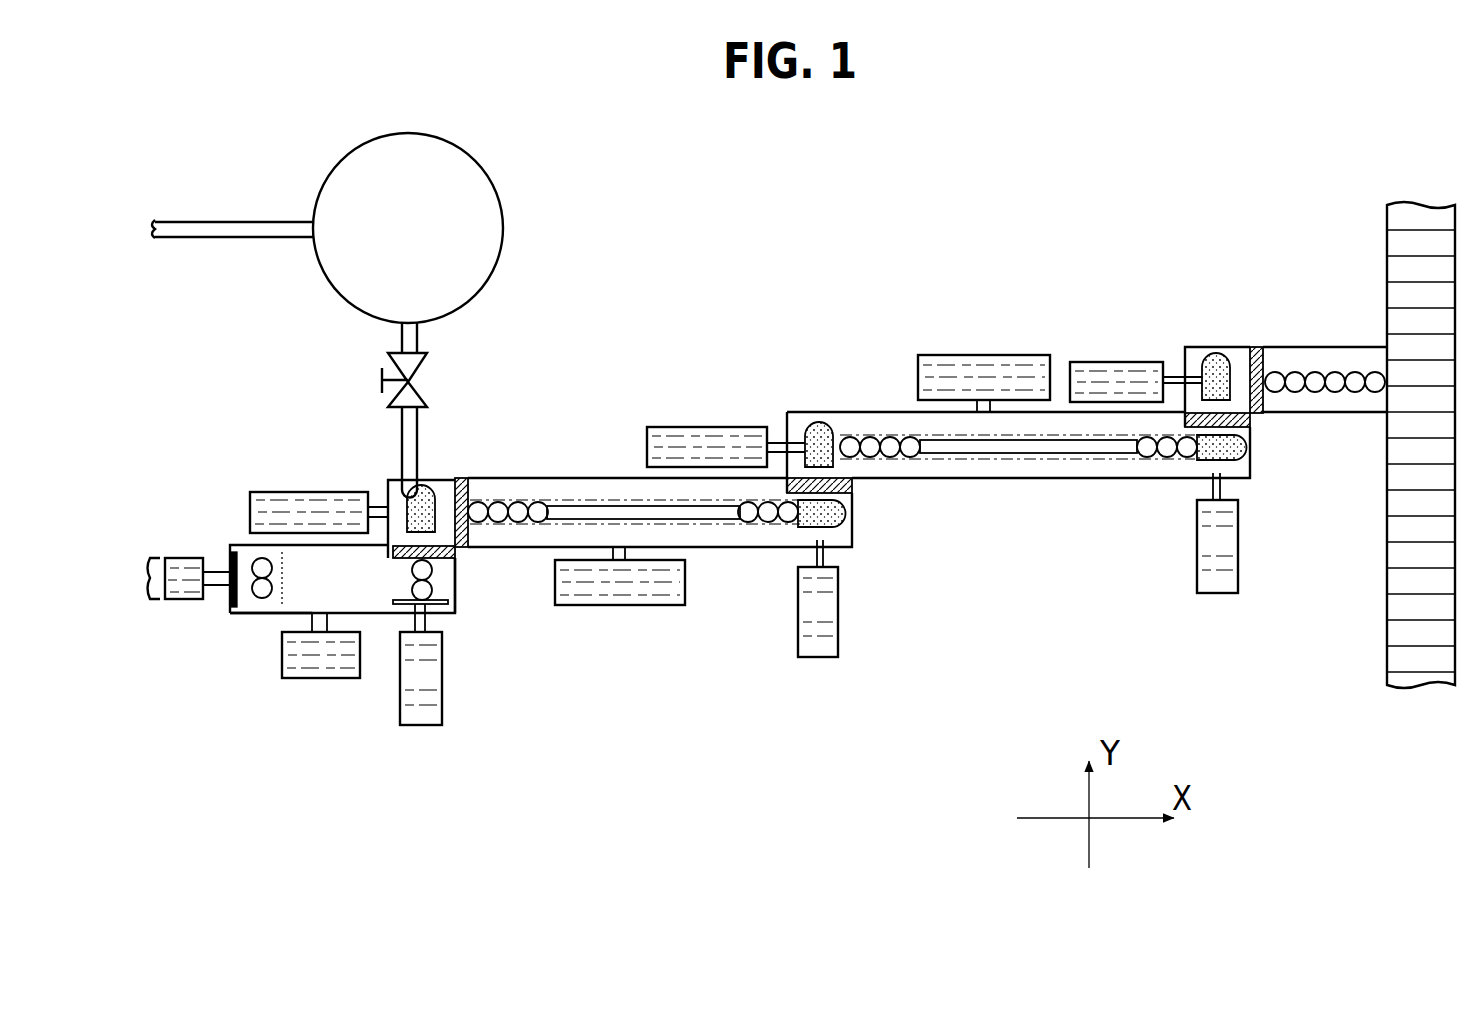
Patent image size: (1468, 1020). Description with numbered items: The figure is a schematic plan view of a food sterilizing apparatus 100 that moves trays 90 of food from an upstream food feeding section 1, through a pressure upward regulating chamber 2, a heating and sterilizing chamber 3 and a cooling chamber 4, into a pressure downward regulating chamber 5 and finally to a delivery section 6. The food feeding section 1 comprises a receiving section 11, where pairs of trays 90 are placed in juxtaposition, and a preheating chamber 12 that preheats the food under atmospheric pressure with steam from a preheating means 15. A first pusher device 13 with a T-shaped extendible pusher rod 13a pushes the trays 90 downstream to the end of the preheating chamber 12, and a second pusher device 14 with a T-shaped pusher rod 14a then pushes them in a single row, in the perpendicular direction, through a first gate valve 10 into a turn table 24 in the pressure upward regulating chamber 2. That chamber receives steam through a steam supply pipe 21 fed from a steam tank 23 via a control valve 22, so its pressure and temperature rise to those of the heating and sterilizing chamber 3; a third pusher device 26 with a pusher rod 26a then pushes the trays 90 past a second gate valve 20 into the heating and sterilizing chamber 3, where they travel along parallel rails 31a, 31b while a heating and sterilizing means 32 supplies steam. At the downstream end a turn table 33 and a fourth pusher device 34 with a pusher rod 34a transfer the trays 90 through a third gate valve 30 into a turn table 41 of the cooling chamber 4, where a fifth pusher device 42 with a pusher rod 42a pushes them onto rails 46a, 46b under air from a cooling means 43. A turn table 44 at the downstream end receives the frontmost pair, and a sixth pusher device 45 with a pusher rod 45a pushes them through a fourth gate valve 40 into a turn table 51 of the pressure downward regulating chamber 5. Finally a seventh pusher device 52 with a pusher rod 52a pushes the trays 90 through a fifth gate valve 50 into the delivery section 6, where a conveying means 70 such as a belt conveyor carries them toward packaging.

The food sterilizing apparatus 100 is at (668, 336).
The food feeding section 1 is at (235, 538).
The pressure upward regulating chamber 2 is at (455, 480).
The heating and sterilizing chamber 3 is at (613, 474).
The cooling chamber 4 is at (976, 484).
The pressure downward regulating chamber 5 is at (1188, 352).
The delivery section 6 is at (1339, 342).
The first gate valve 10 is at (470, 548).
The receiving section 11 is at (240, 613).
The preheating chamber 12 is at (368, 587).
The first pusher device 13 is at (172, 598).
The pusher rod 13a is at (228, 568).
The second pusher device 14 is at (420, 722).
The pusher rod 14a is at (432, 612).
The preheating means 15 is at (330, 675).
The second gate valve 20 is at (468, 523).
The steam supply pipe 21 is at (292, 223).
The control valve 22 is at (420, 375).
The steam tank 23 is at (470, 212).
The turn table 24 is at (445, 497).
The third pusher device 26 is at (300, 495).
The pusher rod 26a is at (386, 505).
The third gate valve 30 is at (853, 488).
The rail 31a is at (590, 507).
The rail 31b is at (707, 523).
The heating and sterilizing means 32 is at (613, 600).
The turn table 33 is at (845, 518).
The fourth pusher device 34 is at (822, 653).
The pusher rod 34a is at (827, 557).
The fourth gate valve 40 is at (1253, 425).
The turn table 41 is at (820, 420).
The fifth pusher device 42 is at (732, 433).
The pusher rod 42a is at (780, 440).
The cooling means 43 is at (983, 362).
The turn table 44 is at (1253, 455).
The sixth pusher device 45 is at (1202, 542).
The pusher rod 45a is at (1212, 490).
The rail 46a is at (940, 440).
The rail 46b is at (1057, 455).
The fifth gate valve 50 is at (1257, 385).
The turn table 51 is at (1215, 353).
The seventh pusher device 52 is at (1123, 363).
The pusher rod 52a is at (1178, 378).
The conveying means 70 is at (1381, 230).
The tray 90 is at (260, 555).